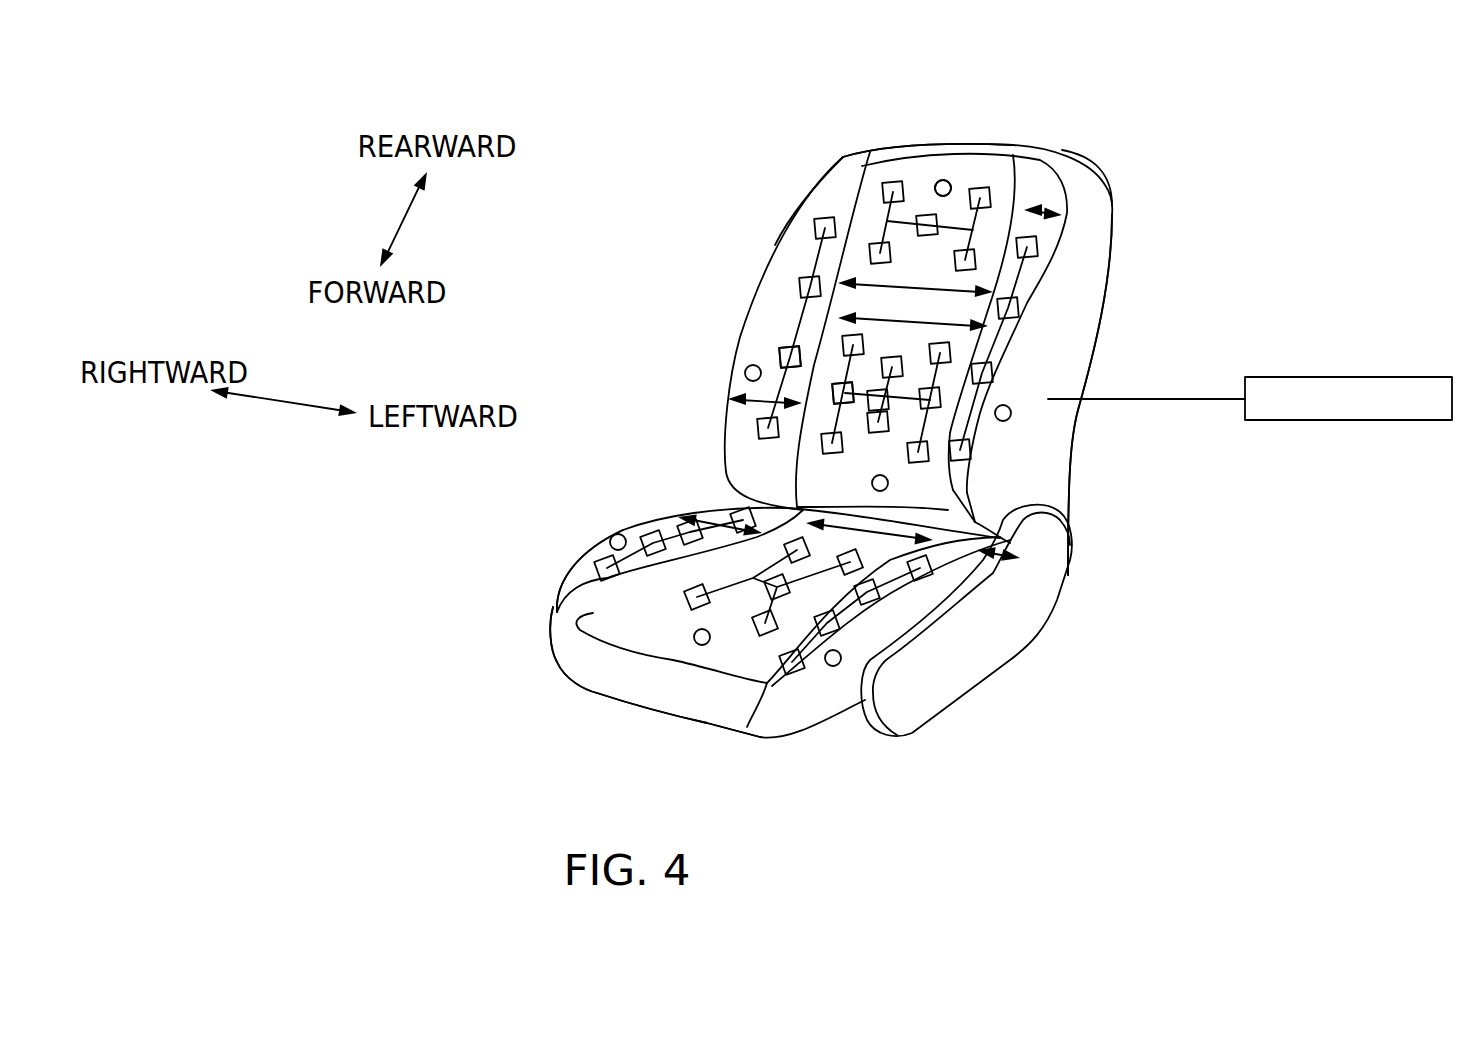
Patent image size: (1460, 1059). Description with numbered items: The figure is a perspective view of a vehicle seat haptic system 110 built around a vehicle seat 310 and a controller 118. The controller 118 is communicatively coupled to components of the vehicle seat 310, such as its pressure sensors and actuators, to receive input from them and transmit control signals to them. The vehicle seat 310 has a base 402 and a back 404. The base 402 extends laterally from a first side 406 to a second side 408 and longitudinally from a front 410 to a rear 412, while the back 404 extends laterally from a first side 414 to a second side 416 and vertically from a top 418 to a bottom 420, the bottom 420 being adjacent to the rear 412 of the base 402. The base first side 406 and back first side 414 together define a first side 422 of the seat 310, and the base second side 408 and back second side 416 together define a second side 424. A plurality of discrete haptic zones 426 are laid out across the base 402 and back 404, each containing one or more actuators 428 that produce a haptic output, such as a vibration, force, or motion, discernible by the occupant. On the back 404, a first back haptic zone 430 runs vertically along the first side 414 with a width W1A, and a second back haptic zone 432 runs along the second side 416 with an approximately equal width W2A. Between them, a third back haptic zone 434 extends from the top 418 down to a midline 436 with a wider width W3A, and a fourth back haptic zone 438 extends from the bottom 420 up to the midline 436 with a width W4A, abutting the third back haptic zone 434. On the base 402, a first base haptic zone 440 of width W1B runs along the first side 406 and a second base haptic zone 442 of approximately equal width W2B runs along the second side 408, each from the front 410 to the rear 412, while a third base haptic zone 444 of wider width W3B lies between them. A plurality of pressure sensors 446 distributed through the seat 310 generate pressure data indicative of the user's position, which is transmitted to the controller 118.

The vehicle seat haptic system 110 is at (700, 95).
The controller 118 is at (1350, 377).
The vehicle seat 310 is at (1012, 165).
The base 402 is at (680, 647).
The back 404 is at (1097, 237).
The first side of the base 406 is at (855, 747).
The second side of the base 408 is at (597, 522).
The front of the base 410 is at (688, 747).
The rear of the base 412 is at (946, 512).
The first side of the back 414 is at (1088, 429).
The second side of the back 416 is at (775, 220).
The top of the back 418 is at (918, 118).
The bottom of the back 420 is at (780, 508).
The first side of the seat 422 is at (1088, 183).
The second side of the seat 424 is at (831, 150).
The haptic zones 426 is at (947, 140).
The actuators 428 is at (985, 170).
The first back haptic zone 430 is at (1047, 228).
The second back haptic zone 432 is at (787, 303).
The third back haptic zone 434 is at (897, 170).
The midline of the seat back 436 is at (992, 310).
The fourth back haptic zone 438 is at (950, 477).
The first base haptic zone 440 is at (775, 662).
The second base haptic zone 442 is at (570, 593).
The third base haptic zone 444 is at (560, 663).
The pressure sensors 446 is at (832, 667).
The width of the first back haptic zone W1A is at (1047, 205).
The width of the second back haptic zone W2A is at (728, 400).
The width of the third back haptic zone W3A is at (925, 285).
The width of the fourth back haptic zone W4A is at (925, 326).
The width of the first base haptic zone W1B is at (990, 571).
The width of the second base haptic zone W2B is at (700, 512).
The width of the third base haptic zone W3B is at (1000, 538).